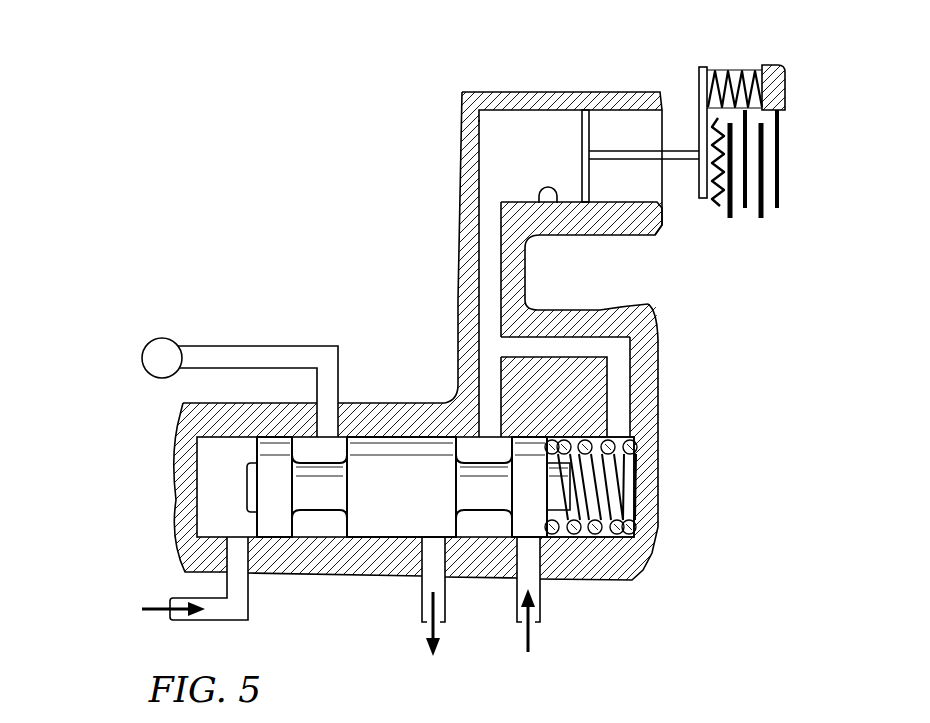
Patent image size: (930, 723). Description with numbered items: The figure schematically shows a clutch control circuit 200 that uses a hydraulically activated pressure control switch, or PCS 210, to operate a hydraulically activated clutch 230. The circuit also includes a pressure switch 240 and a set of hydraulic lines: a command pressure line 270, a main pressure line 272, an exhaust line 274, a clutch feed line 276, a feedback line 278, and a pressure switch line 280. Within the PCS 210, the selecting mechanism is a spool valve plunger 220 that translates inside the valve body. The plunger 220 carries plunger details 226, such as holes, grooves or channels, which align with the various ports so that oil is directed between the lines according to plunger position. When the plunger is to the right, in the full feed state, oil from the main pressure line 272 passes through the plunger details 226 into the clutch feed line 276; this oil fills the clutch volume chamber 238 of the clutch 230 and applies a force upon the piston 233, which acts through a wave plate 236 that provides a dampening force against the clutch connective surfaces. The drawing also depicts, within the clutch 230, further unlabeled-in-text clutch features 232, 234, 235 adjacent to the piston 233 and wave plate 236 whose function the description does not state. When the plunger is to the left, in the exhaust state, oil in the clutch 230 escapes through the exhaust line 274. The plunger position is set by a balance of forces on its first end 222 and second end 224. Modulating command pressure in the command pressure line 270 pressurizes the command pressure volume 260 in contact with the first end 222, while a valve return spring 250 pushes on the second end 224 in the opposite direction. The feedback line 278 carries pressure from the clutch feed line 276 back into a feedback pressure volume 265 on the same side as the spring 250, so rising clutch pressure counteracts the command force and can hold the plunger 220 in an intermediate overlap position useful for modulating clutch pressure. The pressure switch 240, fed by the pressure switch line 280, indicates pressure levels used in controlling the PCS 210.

The clutch control circuit 200 is at (220, 118).
The PCS 210 is at (407, 437).
The spool valve plunger 220 is at (380, 462).
The first end 222 is at (247, 487).
The second end 224 is at (557, 512).
The plunger details 226 is at (310, 460).
The hydraulically activated clutch 230 is at (530, 128).
The pivot 232 is at (550, 204).
The piston 233 is at (617, 159).
The clutch plates 234 is at (765, 212).
The return spring 235 is at (738, 72).
The wave plate 236 is at (720, 207).
The clutch volume chamber 238 is at (490, 158).
The pressure switch 240 is at (160, 348).
The valve return spring 250 is at (613, 482).
The command pressure volume 260 is at (205, 495).
The feedback pressure volume 265 is at (603, 503).
The command pressure line 270 is at (220, 610).
The main pressure line 272 is at (540, 593).
The exhaust line 274 is at (423, 592).
The clutch feed line 276 is at (488, 293).
The feedback line 278 is at (618, 400).
The pressure switch line 280 is at (240, 357).